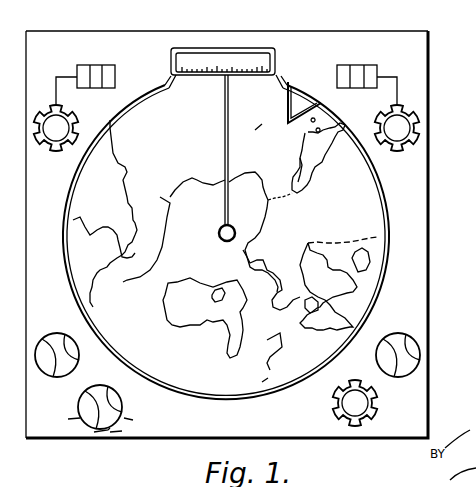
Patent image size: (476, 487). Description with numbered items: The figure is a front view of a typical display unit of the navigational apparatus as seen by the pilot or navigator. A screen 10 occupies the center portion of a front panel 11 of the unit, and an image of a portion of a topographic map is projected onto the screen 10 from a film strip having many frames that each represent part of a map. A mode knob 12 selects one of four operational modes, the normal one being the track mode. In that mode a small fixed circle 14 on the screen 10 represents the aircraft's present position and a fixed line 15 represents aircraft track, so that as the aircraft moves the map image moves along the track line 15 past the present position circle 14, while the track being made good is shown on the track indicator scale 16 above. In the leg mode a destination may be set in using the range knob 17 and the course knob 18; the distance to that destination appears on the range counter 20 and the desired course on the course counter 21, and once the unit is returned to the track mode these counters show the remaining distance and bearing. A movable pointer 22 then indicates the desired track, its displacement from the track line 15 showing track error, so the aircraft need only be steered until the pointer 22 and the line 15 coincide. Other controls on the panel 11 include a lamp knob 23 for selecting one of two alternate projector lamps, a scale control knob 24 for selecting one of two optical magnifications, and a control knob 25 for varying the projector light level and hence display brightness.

The screen 10 is at (343, 215).
The front panel 11 is at (430, 250).
The mode knob 12 is at (79, 401).
The fixed circle 14 is at (219, 235).
The fixed line 15 is at (224, 135).
The track indicator scale 16 is at (281, 52).
The range knob 17 is at (35, 118).
The course knob 18 is at (419, 125).
The range counter 20 is at (116, 72).
The course counter 21 is at (378, 68).
The movable indicator or pointer 22 is at (295, 92).
The lamp knob 23 is at (38, 344).
The scale control knob 24 is at (414, 350).
The control knob 25 is at (379, 415).